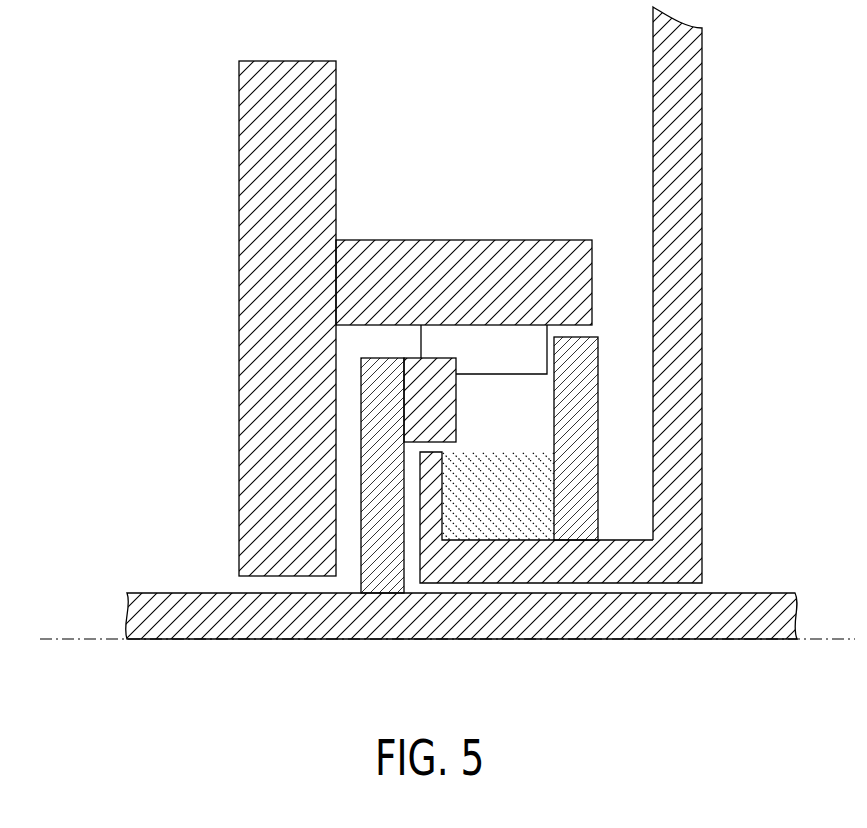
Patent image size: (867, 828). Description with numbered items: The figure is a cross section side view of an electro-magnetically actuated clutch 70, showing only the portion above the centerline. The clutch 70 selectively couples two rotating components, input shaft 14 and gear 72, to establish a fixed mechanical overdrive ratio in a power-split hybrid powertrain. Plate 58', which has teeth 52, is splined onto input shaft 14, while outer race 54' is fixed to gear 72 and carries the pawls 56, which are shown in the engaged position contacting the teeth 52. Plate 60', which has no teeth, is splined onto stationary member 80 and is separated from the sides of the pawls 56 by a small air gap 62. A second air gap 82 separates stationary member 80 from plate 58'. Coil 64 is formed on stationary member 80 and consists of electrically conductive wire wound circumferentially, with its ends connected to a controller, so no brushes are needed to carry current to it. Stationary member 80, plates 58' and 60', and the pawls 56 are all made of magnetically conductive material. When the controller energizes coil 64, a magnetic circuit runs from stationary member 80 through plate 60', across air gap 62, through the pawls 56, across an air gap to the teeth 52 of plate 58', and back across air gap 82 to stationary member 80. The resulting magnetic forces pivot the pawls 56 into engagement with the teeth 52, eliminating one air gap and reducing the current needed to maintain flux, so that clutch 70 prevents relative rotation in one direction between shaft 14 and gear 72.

The input shaft 14 is at (178, 593).
The teeth 52 is at (404, 387).
The outer race 54' is at (464, 250).
The pawls 56 is at (507, 360).
The plate 58' is at (379, 496).
The plate 60' is at (576, 515).
The air gap 62 is at (554, 352).
The coil 64 is at (498, 540).
The clutch 70 is at (460, 90).
The gear 72 is at (239, 157).
The stationary member 80 is at (653, 112).
The air gap 82 is at (405, 443).